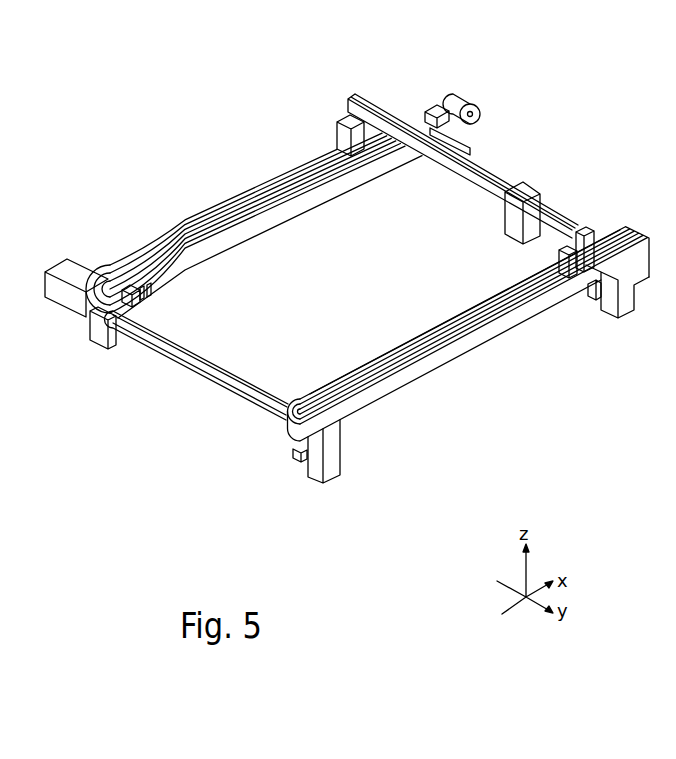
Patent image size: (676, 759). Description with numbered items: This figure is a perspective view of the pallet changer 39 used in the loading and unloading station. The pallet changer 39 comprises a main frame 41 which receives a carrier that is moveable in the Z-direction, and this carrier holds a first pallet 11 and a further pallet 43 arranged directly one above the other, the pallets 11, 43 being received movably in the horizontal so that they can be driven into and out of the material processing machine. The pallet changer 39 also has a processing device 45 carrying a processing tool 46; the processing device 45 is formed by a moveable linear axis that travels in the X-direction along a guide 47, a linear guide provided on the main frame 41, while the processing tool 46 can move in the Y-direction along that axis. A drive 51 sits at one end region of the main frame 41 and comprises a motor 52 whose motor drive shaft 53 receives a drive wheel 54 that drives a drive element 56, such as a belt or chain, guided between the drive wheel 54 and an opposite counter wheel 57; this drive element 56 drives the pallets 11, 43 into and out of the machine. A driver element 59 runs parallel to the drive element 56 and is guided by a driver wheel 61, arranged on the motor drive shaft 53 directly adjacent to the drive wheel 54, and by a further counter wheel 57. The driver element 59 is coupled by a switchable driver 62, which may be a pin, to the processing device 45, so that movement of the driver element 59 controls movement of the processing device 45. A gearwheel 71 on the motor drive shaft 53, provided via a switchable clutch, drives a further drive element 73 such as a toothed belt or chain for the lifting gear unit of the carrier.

The pallet changer 39 is at (250, 96).
The processing device 45 is at (388, 78).
The processing tool 46 is at (524, 192).
The guide 47 is at (316, 164).
The drive 51 is at (68, 230).
The motor 52 is at (63, 272).
The motor drive shaft 53 is at (177, 349).
The drive wheel 54 is at (110, 347).
The drive element 56 is at (467, 100).
The counter wheel 57 is at (443, 100).
The driver element 59 is at (262, 195).
The driver wheel 61 is at (86, 312).
The driver 62 is at (353, 134).
The gearwheel 71 is at (143, 278).
The further drive element 73 is at (583, 230).
The first pallet 11 is at (465, 314).
The further pallet 43 is at (400, 328).
The main frame 41 is at (333, 464).